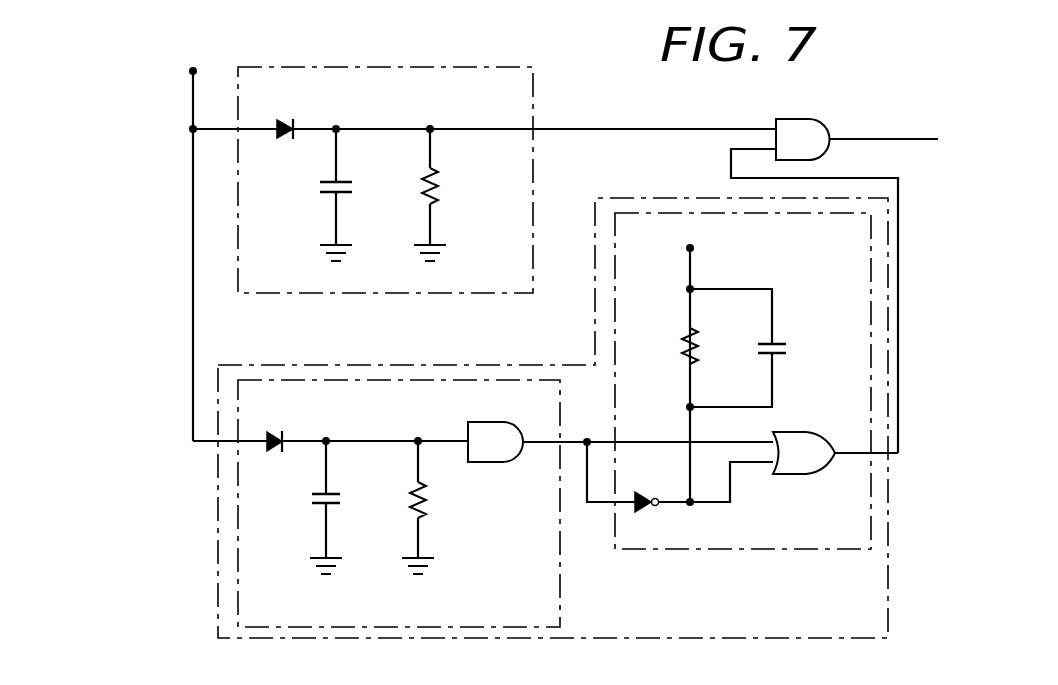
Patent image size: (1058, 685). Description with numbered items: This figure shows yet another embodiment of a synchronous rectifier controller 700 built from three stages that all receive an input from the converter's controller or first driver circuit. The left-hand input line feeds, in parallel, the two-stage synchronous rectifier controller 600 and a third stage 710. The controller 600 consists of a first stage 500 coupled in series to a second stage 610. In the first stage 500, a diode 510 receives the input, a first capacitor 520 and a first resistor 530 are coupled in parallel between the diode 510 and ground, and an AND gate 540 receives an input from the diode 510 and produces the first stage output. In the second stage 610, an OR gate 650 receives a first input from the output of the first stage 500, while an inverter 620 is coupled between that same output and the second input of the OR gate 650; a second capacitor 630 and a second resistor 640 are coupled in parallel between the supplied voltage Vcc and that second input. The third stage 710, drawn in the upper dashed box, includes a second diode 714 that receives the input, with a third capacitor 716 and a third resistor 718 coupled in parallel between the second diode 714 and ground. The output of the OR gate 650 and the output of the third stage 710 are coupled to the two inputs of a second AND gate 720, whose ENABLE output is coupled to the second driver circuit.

The synchronous rectifier controller 700 is at (166, 247).
The third stage 710 is at (392, 293).
The second diode 714 is at (289, 118).
The third capacitor 716 is at (322, 189).
The third resistor 718 is at (446, 194).
The second AND gate 720 is at (811, 118).
The synchronous rectifier controller 600 is at (570, 363).
The first stage 500 is at (558, 563).
The diode 510 is at (266, 433).
The first capacitor 520 is at (312, 502).
The first resistor 530 is at (434, 504).
The AND gate 540 is at (467, 429).
The second stage 610 is at (733, 549).
The inverter 620 is at (644, 512).
The second capacitor 630 is at (683, 352).
The second resistor 640 is at (760, 350).
The OR gate 650 is at (790, 475).